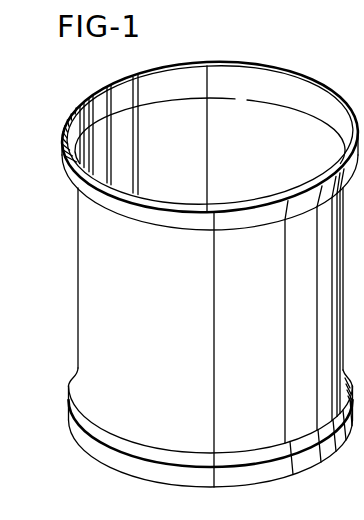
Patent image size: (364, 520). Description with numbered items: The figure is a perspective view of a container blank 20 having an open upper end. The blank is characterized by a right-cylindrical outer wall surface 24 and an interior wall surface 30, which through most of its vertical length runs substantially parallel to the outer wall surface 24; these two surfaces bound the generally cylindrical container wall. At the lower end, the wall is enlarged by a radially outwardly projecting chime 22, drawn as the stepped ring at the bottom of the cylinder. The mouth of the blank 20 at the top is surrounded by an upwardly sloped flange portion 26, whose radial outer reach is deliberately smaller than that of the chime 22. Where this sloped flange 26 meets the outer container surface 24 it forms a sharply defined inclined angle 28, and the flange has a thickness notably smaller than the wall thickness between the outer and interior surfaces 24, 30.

The container blank 20 is at (70, 296).
The chime 22 is at (68, 407).
The outer wall surface 24 is at (72, 254).
The flange portion 26 is at (267, 66).
The inclined angle 28 is at (258, 232).
The interior wall surface 30 is at (178, 142).